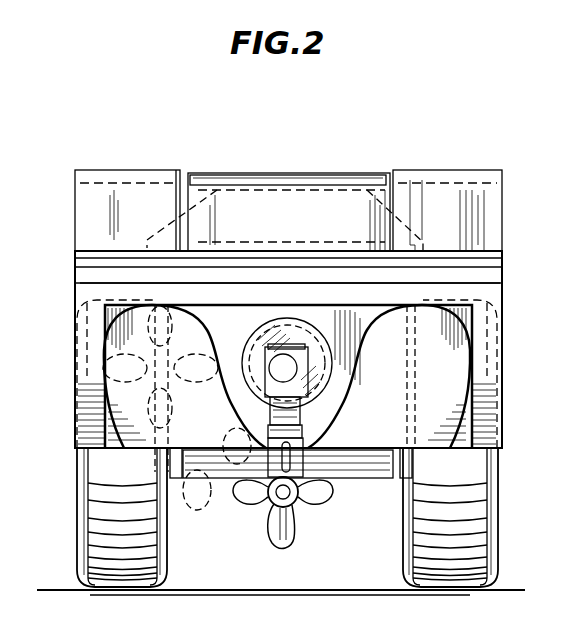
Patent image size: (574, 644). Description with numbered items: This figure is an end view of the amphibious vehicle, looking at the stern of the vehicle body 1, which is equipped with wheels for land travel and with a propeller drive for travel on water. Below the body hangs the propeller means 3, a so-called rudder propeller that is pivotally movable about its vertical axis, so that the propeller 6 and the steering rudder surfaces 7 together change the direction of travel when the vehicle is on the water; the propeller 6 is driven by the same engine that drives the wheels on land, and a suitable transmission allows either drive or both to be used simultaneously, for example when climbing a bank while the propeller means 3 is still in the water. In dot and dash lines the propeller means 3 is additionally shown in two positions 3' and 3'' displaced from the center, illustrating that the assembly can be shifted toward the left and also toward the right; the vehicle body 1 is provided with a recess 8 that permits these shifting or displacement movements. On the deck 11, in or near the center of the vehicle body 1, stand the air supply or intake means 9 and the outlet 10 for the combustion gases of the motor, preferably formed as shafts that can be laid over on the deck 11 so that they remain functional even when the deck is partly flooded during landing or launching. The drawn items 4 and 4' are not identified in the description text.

The vehicle body 1 is at (503, 277).
The propeller means 3 is at (291, 427).
The displaced position of propeller assembly 3' is at (259, 388).
The displaced position of propeller assembly 3'' is at (217, 479).
The wheel 4 is at (281, 517).
The frame beam 4' is at (288, 246).
The propeller 6 is at (282, 547).
The steering rudder surfaces 7 is at (272, 527).
The recess 8 is at (98, 352).
The air supply or intake means 9 is at (98, 180).
The outlet 10 is at (263, 198).
The deck 11 is at (90, 247).